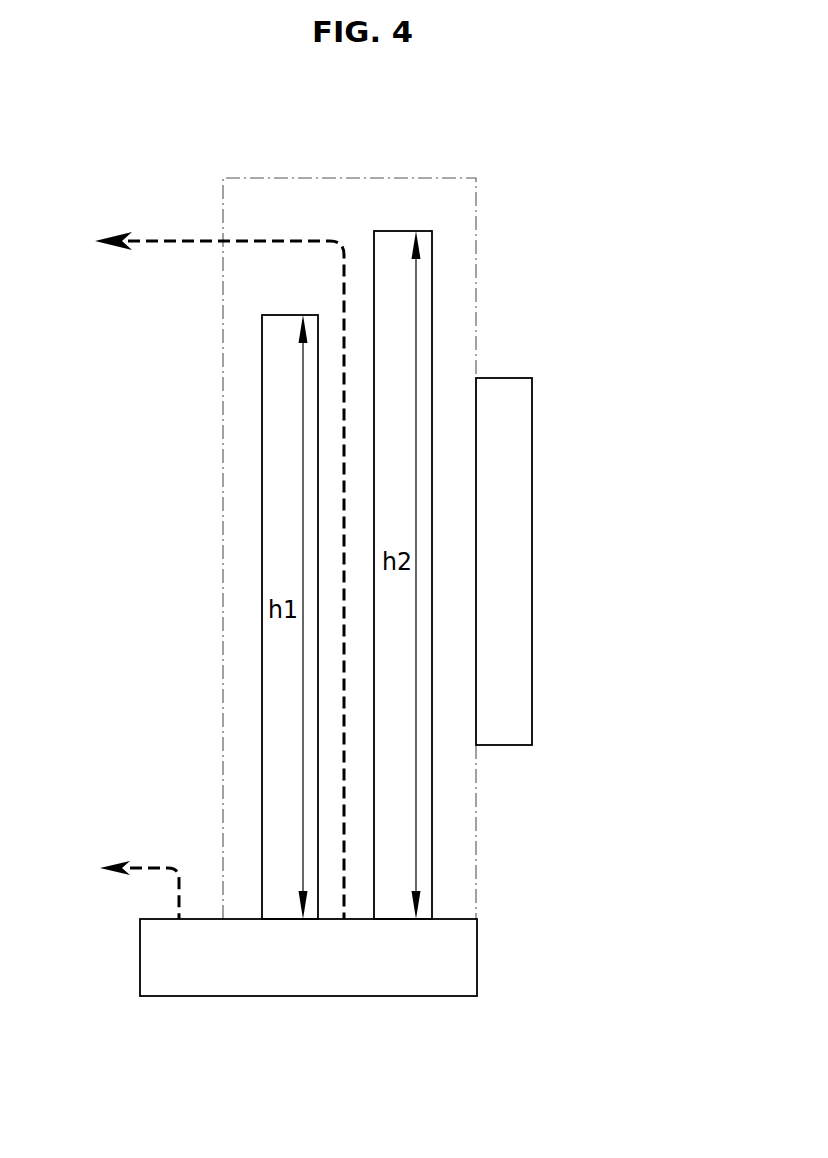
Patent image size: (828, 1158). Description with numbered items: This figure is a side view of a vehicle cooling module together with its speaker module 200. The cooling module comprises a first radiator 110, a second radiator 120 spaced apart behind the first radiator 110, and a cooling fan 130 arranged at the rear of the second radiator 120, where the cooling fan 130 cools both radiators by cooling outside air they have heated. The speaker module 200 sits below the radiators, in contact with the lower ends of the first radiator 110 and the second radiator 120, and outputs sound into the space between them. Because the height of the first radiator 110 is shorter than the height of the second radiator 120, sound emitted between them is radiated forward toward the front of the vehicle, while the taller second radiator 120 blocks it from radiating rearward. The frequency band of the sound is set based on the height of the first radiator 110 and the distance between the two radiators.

The first radiator 110 is at (272, 370).
The second radiator 120 is at (427, 328).
The cooling fan 130 is at (522, 665).
The speaker module 200 is at (424, 982).